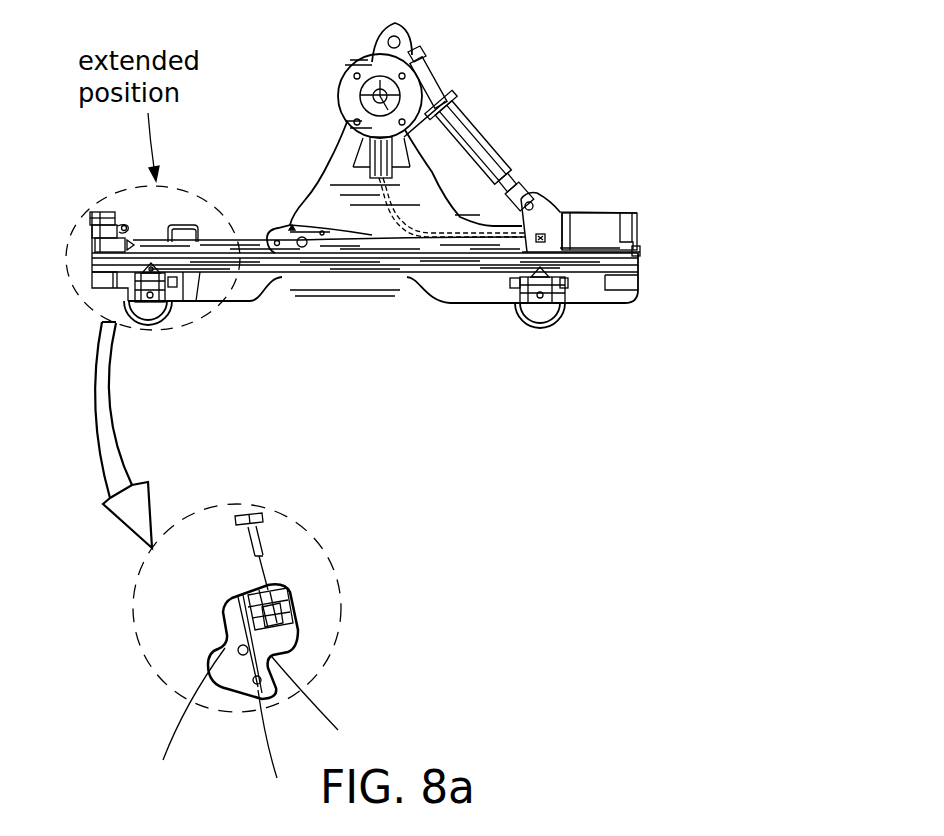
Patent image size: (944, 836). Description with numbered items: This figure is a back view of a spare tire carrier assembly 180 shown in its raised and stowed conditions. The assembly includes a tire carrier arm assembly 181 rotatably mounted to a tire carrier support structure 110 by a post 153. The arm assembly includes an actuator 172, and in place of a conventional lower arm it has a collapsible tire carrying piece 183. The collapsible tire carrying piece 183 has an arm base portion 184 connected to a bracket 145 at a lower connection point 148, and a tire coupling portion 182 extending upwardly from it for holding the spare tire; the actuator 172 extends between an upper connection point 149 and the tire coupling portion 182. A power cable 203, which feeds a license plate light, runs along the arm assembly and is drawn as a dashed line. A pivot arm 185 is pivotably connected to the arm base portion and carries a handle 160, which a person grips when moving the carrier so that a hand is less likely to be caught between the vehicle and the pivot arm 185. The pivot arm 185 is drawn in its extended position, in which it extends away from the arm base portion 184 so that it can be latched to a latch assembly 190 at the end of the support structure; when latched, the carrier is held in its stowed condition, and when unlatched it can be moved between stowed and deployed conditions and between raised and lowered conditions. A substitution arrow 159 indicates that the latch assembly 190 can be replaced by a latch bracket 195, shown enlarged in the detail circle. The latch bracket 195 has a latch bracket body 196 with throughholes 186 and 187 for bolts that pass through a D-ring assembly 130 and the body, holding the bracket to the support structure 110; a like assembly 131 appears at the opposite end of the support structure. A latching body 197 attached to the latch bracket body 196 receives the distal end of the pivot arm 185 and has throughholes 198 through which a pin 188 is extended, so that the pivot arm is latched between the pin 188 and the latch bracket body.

The tire carrier support structure 110 is at (605, 295).
The D-ring assembly 130 is at (175, 322).
The rear wheel 131 is at (532, 352).
The bracket 145 is at (590, 218).
The lower connection point 148 is at (532, 238).
The upper connection point 149 is at (533, 201).
The post 153 is at (641, 254).
The substitution arrow 159 is at (110, 432).
The handle 160 is at (182, 222).
The actuator 172 is at (480, 128).
The spare tire carrier assembly 180 is at (466, 76).
The tire carrier arm assembly 181 is at (304, 80).
The tire coupling portion 182 is at (335, 170).
The collapsible tire carrying piece 183 is at (316, 300).
The arm base portion 184 is at (398, 240).
The pivot arm 185 is at (226, 246).
The throughhole 186 is at (187, 720).
The throughhole 187 is at (281, 750).
The pin 188 is at (262, 538).
The latch assembly 190 is at (96, 198).
The latch bracket 195 is at (328, 580).
The latch bracket body 196 is at (237, 617).
The latching body 197 is at (329, 706).
The throughholes 198 is at (300, 560).
The power cable 203 is at (383, 188).